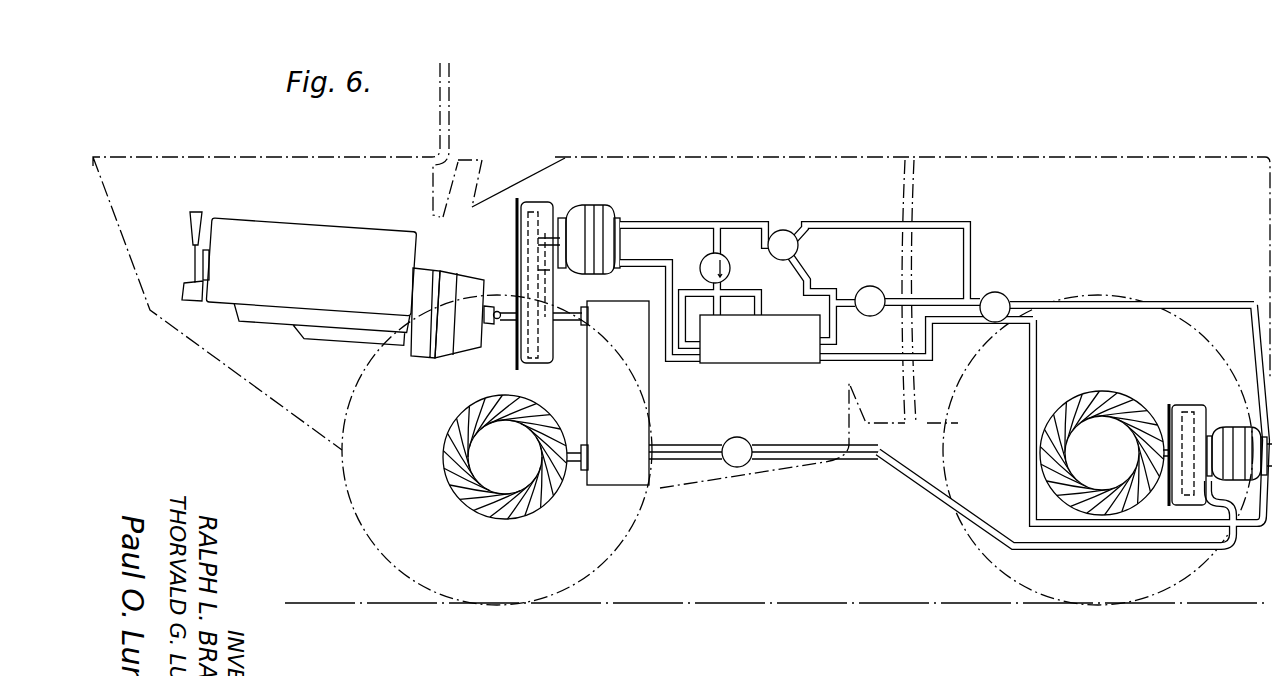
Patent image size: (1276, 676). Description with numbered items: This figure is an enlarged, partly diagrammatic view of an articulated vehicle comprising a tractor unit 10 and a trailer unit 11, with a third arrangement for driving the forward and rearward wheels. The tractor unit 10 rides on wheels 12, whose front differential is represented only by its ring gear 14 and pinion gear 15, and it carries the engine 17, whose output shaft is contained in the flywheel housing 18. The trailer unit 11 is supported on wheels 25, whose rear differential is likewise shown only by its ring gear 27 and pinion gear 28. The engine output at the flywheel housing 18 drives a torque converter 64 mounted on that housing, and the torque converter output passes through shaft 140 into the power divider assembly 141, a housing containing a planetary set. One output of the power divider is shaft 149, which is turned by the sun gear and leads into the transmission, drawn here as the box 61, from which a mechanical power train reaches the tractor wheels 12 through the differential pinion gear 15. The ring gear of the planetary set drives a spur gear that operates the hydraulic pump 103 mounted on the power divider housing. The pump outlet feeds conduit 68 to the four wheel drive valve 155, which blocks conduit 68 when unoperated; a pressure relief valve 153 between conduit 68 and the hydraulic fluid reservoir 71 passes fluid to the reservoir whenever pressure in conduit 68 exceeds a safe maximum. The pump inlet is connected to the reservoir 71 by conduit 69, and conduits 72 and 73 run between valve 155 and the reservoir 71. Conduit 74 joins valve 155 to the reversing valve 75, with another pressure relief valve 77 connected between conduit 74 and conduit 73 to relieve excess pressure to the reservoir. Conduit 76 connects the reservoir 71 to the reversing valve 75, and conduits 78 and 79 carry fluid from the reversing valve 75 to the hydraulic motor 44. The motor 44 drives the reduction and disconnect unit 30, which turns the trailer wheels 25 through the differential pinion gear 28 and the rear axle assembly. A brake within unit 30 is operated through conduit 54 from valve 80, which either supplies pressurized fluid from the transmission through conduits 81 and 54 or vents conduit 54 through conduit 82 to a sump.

The tractor unit 10 is at (393, 150).
The trailer unit 11 is at (1045, 150).
The wheels 12 is at (340, 512).
The ring gear 14 is at (476, 508).
The pinion gear 15 is at (558, 496).
The engine 17 is at (321, 269).
The flywheel housing 18 is at (428, 271).
The wheels 25 is at (956, 541).
The ring gear 27 is at (1130, 392).
The pinion gear 28 is at (1143, 452).
The reduction and disconnect unit 30 is at (1186, 402).
The hydraulic motor 44 is at (1242, 425).
The conduit 54 is at (1163, 552).
The gear box 61 is at (630, 401).
The torque converter 64 is at (465, 293).
The conduit 68 is at (698, 221).
The conduit 69 is at (648, 262).
The hydraulic fluid reservoir 71 is at (772, 350).
The conduit 72 is at (757, 294).
The conduit 73 is at (812, 283).
The conduit 74 is at (937, 221).
The reversing valve 75 is at (1000, 292).
The conduit 76 is at (861, 353).
The pressure relief valve 77 is at (871, 286).
The conduit 78 is at (1170, 302).
The conduit 79 is at (1040, 362).
The valve 80 is at (745, 437).
The conduit 81 is at (712, 441).
The conduit 82 is at (687, 463).
The hydraulic pump 103 is at (593, 205).
The shaft 140 is at (500, 328).
The power divider assembly 141 is at (541, 203).
The output shaft 149 is at (558, 335).
The pressure relief valve 153 is at (733, 262).
The four wheel drive valve 155 is at (793, 232).